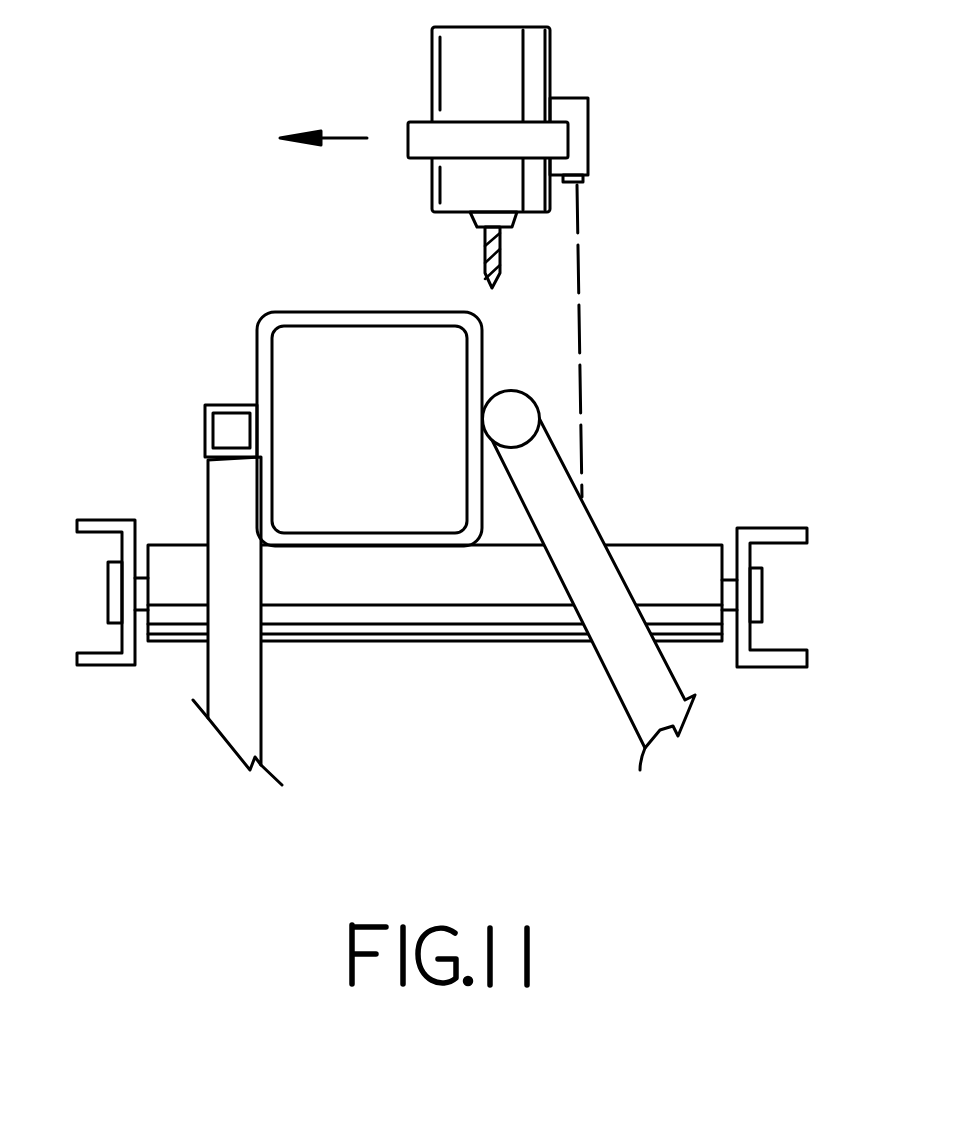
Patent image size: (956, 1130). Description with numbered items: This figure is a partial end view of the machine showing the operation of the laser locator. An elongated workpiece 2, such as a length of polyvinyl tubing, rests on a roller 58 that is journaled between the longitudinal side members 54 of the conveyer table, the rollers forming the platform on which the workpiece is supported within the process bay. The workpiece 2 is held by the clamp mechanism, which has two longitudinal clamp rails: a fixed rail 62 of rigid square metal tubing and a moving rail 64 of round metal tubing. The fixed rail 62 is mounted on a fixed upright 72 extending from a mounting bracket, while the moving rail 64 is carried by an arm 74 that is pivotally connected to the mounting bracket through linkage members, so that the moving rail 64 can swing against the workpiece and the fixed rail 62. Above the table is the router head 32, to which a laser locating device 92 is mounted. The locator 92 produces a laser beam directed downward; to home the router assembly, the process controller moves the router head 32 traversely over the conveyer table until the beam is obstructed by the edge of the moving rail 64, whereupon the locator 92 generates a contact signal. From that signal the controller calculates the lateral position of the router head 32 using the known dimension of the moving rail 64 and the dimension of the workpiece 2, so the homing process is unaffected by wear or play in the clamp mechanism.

The workpiece 2 is at (332, 312).
The router head 32 is at (460, 192).
The side member 54 is at (770, 528).
The roller 58 is at (473, 632).
The fixed rail 62 is at (233, 405).
The moving rail 64 is at (512, 413).
The fixed upright 72 is at (237, 675).
The arm 74 is at (572, 522).
The laser locating device 92 is at (578, 162).